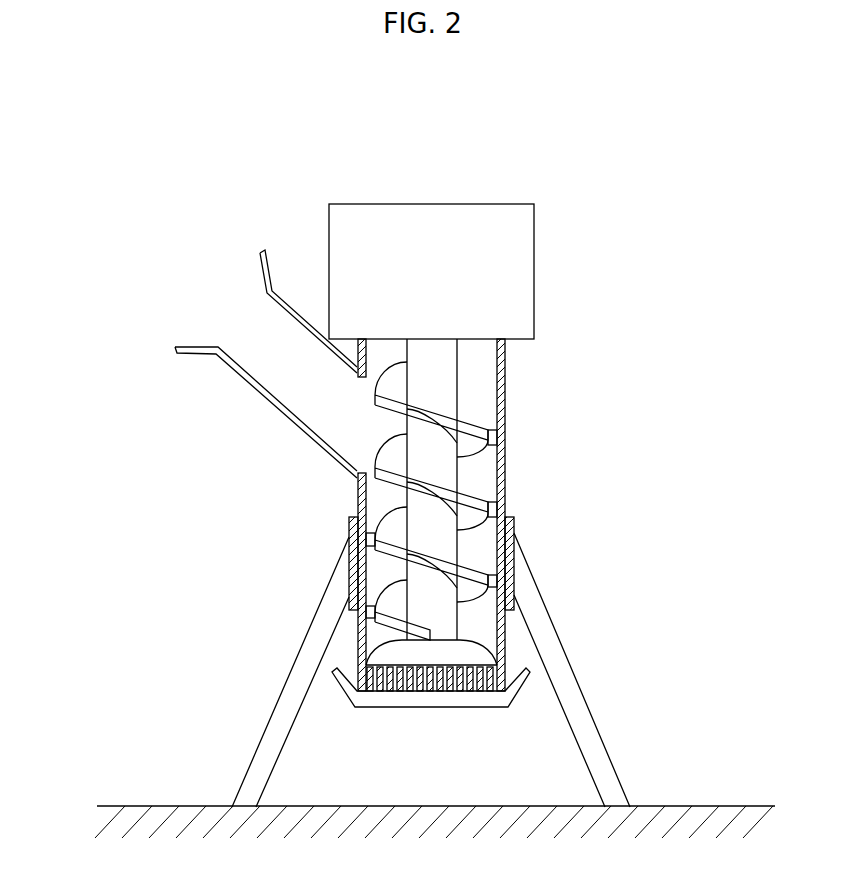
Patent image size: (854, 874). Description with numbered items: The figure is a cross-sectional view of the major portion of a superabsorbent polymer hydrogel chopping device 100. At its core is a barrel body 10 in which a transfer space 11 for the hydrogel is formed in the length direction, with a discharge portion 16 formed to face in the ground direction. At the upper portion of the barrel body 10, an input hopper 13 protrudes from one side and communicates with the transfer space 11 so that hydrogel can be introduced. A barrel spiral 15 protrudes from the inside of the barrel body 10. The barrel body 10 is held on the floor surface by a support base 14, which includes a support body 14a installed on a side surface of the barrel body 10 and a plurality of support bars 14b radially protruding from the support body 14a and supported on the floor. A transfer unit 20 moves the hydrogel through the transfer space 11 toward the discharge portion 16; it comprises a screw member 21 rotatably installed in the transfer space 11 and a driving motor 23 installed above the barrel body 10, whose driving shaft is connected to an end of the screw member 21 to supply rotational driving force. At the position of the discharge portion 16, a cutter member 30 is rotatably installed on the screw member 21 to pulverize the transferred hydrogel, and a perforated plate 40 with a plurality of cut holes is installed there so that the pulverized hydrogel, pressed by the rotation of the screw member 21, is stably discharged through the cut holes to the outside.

The superabsorbent polymer hydrogel chopping device 100 is at (506, 166).
The barrel body 10 is at (500, 477).
The transfer space 11 is at (485, 384).
The input hopper 13 is at (257, 387).
The support base 14 is at (628, 580).
The support body 14a is at (511, 572).
The support bars 14b is at (310, 642).
The barrel spiral 15 is at (492, 442).
The discharge portion 16 is at (465, 702).
The transfer unit 20 is at (588, 273).
The screw member 21 is at (443, 364).
The driving motor 23 is at (510, 283).
The cutter member 30 is at (423, 655).
The perforated plate 40 is at (388, 688).